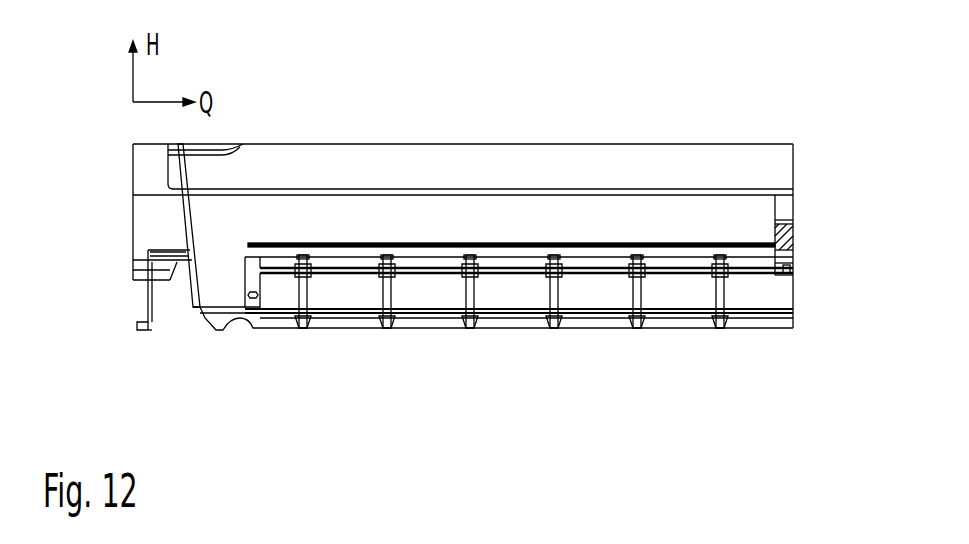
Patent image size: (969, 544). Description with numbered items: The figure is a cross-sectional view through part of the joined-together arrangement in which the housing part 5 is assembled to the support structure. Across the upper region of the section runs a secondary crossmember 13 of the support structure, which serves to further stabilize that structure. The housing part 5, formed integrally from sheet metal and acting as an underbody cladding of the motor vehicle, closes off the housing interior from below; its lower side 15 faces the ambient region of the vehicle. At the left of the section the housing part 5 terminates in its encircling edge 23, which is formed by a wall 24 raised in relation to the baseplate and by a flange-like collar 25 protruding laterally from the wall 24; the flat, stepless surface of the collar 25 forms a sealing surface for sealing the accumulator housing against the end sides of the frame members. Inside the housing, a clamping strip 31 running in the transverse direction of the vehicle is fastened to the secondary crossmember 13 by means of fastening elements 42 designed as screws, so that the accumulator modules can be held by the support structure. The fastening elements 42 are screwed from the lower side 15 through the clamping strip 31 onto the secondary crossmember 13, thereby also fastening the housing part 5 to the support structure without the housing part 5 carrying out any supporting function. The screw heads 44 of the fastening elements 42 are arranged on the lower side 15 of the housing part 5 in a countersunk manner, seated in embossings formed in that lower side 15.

The housing part 5 is at (345, 352).
The secondary crossmember 13 is at (420, 213).
The lower side 15 is at (430, 326).
The edge 23 is at (127, 301).
The wall 24 is at (140, 312).
The collar 25 is at (150, 256).
The clamping strip 31 is at (591, 295).
The fastening element 42 is at (720, 292).
The screw head 44 is at (718, 325).